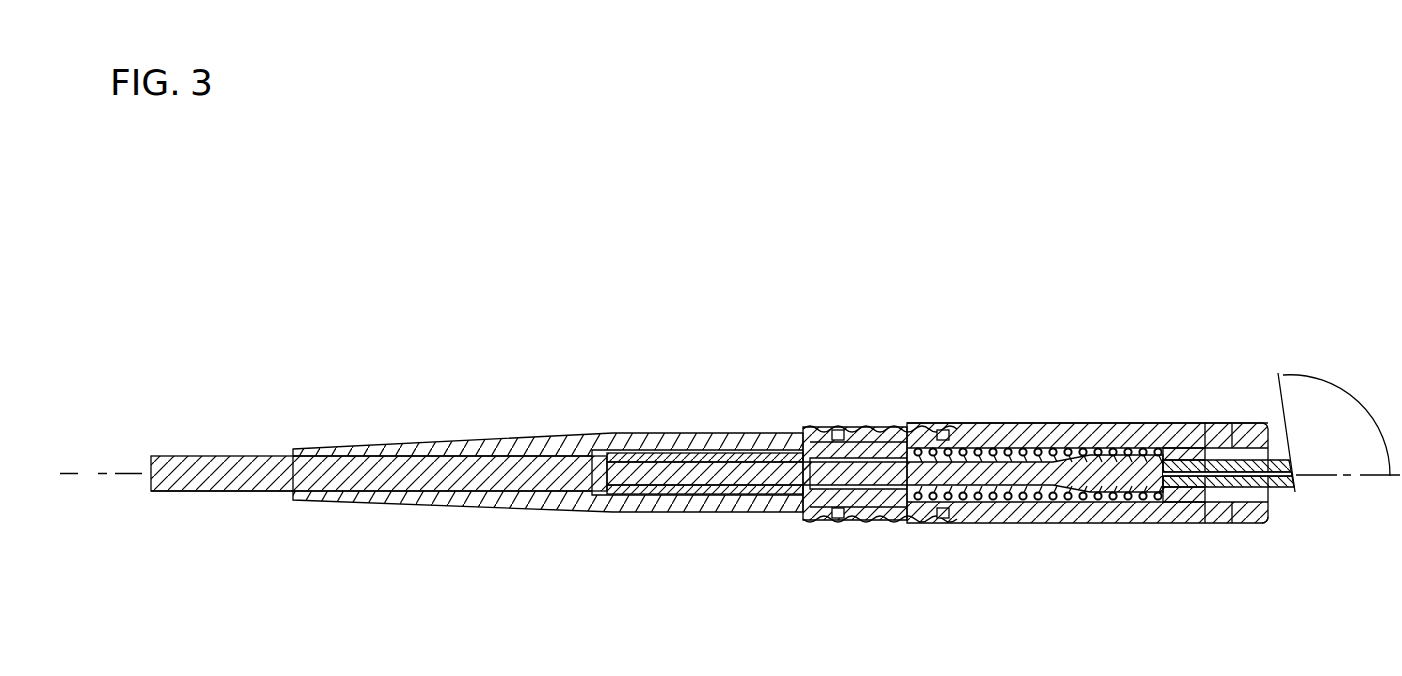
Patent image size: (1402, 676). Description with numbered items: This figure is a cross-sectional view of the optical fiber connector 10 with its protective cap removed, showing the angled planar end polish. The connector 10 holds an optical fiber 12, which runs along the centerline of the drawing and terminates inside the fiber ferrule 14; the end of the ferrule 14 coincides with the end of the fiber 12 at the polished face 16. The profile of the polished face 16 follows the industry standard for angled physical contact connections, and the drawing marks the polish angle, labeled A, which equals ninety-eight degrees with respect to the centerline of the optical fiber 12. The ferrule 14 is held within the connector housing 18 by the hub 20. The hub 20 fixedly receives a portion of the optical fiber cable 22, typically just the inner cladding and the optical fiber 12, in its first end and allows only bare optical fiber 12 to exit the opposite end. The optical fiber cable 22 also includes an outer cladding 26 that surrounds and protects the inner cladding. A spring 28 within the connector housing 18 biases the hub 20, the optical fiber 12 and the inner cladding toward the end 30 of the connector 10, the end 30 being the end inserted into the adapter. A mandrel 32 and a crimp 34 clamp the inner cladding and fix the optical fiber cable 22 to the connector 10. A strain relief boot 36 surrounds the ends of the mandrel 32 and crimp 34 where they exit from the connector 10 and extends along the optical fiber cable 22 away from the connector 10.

The optical fiber connector 10 is at (1102, 406).
The optical fiber 12 is at (1291, 483).
The fiber ferrule 14 is at (1284, 490).
The polished face 16 is at (1294, 466).
The connector housing 18 is at (1104, 515).
The hub 20 is at (1181, 494).
The optical fiber cable 22 is at (213, 492).
The outer cladding 26 is at (270, 485).
The spring 28 is at (1019, 492).
The end 30 is at (1270, 526).
The mandrel 32 is at (872, 497).
The crimp 34 is at (687, 492).
The strain relief boot 36 is at (465, 497).